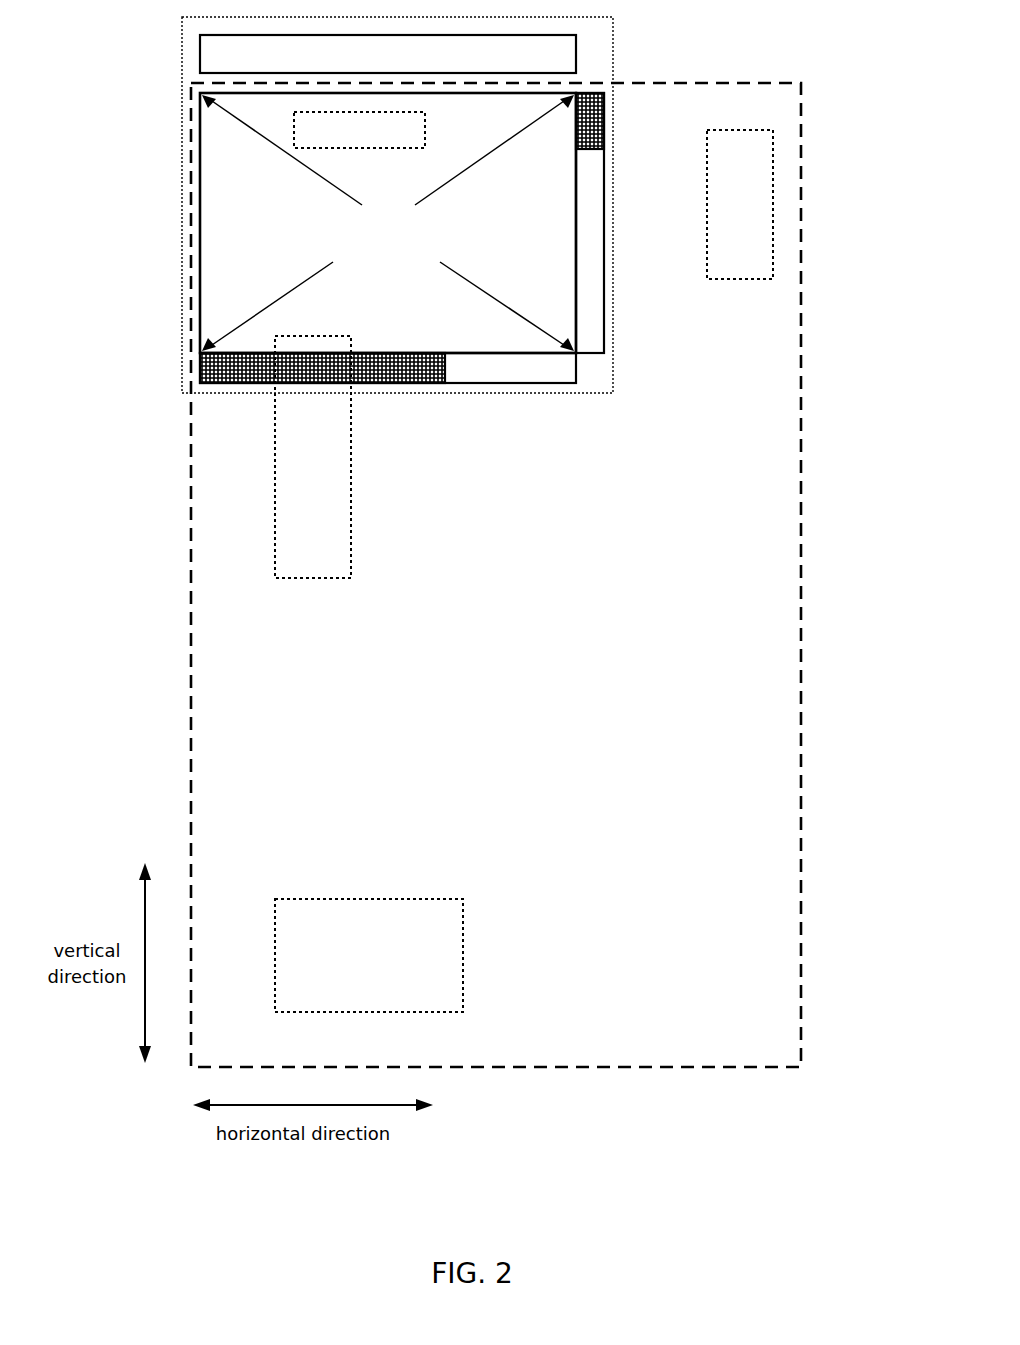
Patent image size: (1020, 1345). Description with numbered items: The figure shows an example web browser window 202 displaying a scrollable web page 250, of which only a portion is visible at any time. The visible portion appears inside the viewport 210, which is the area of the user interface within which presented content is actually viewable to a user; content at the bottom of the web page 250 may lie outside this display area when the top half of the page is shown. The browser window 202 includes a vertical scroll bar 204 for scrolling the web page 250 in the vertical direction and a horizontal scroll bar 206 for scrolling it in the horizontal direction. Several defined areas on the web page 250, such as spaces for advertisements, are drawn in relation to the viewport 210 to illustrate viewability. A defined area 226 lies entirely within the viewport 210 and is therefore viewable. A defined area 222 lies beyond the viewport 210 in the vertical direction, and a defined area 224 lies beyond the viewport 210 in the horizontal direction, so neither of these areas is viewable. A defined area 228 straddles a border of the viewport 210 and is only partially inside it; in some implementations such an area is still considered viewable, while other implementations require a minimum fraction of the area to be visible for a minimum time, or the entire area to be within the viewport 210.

The web browser window 202 is at (182, 27).
The vertical scroll bar 204 is at (610, 316).
The horizontal scroll bar 206 is at (477, 387).
The viewport 210 is at (388, 223).
The defined area 222 is at (369, 955).
The defined area 224 is at (740, 204).
The defined area 226 is at (359, 130).
The defined area 228 is at (313, 457).
The scrollable web page 250 is at (801, 617).